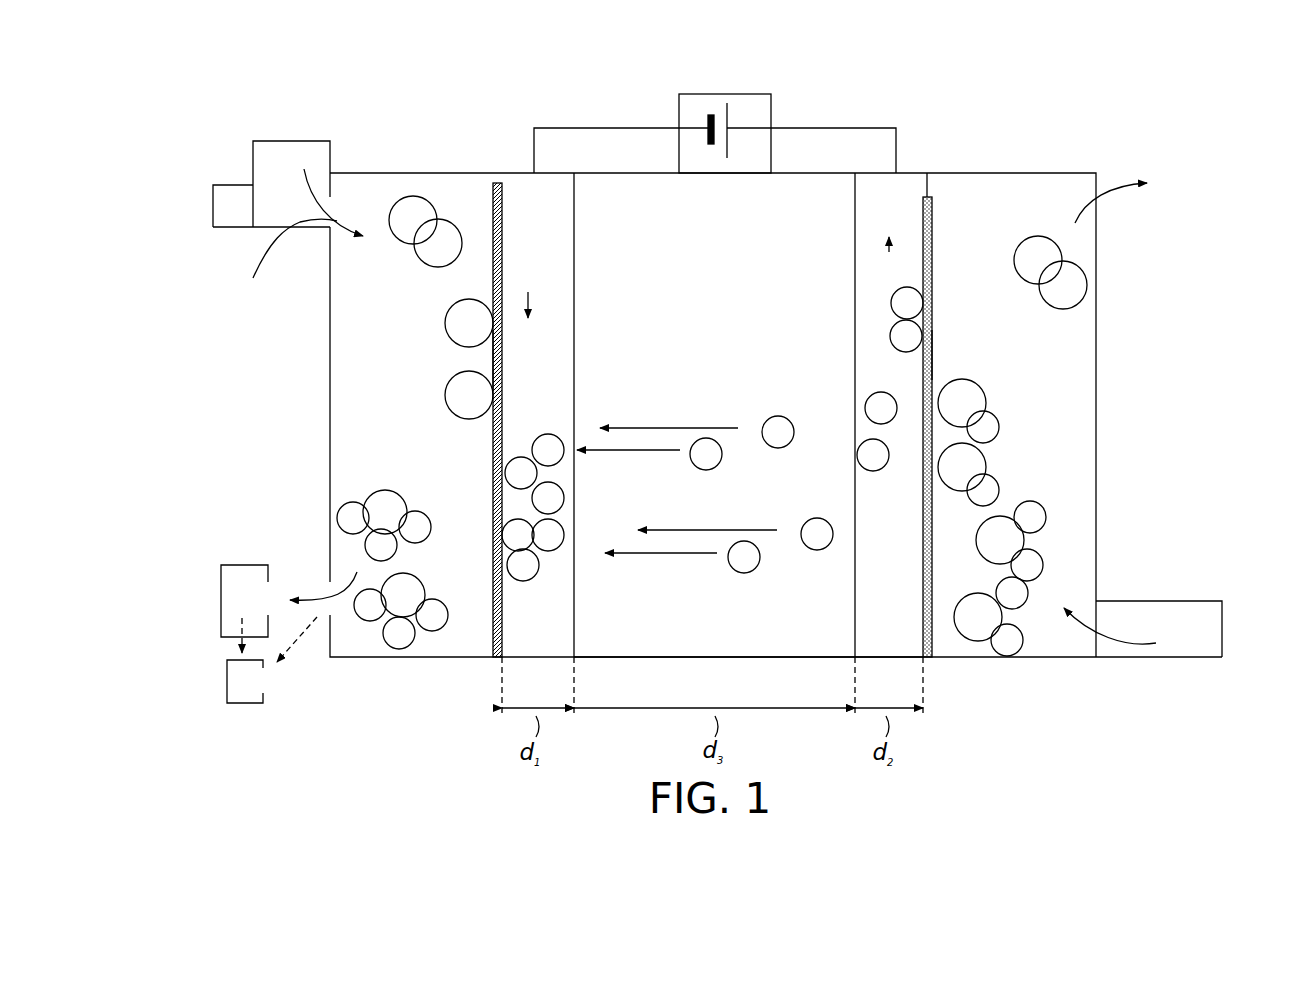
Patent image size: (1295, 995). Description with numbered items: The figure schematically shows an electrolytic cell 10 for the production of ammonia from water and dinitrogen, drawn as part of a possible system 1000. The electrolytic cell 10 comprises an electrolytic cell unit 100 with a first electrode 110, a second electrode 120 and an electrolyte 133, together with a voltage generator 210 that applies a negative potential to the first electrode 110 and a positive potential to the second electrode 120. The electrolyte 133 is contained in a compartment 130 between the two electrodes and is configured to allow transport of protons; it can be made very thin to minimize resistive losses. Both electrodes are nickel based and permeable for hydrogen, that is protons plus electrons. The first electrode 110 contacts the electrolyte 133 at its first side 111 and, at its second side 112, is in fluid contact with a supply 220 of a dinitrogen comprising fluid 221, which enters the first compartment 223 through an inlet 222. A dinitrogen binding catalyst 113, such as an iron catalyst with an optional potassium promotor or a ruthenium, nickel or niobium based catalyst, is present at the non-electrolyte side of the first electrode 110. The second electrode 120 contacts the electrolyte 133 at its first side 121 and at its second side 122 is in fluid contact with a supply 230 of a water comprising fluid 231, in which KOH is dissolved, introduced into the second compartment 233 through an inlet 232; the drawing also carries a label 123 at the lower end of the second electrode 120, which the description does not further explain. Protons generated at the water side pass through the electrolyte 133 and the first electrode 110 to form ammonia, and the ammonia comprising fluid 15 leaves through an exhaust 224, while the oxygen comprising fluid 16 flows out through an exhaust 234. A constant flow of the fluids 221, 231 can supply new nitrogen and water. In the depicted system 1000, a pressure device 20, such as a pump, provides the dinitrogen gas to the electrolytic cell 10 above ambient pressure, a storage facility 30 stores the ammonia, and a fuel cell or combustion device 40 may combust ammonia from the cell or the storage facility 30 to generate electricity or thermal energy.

The electrolytic cell 10 is at (1133, 108).
The ammonia comprising fluid 15 is at (320, 603).
The oxygen comprising fluid 16 is at (1112, 187).
The pressure device 20 is at (222, 238).
The storage facility 30 is at (227, 555).
The fuel cell or combustion device 40 is at (220, 680).
The electrolytic cell unit 100 is at (621, 100).
The first electrode 110 is at (503, 176).
The first side of first electrode 111 is at (578, 329).
The second side of first electrode 112 is at (493, 359).
The dinitrogen binding catalyst 113 is at (502, 634).
The second electrode 120 is at (912, 165).
The first side of second electrode 121 is at (852, 346).
The second side of second electrode 122 is at (932, 350).
The second electrode region 123 is at (923, 634).
The electrolyte compartment 130 is at (807, 210).
The electrolyte 133 is at (732, 608).
The voltage generator 210 is at (785, 78).
The supply of dinitrogen comprising fluid 220 is at (291, 98).
The dinitrogen comprising fluid 221 is at (332, 212).
The inlet for dinitrogen comprising fluid 222 is at (276, 266).
The first compartment 223 is at (358, 444).
The exhaust for ammonia comprising fluid 224 is at (327, 607).
The supply of water comprising fluid 230 is at (1215, 588).
The water comprising fluid 231 is at (1133, 638).
The inlet for water comprising fluid 232 is at (1097, 625).
The second compartment 233 is at (1077, 393).
The exhaust for oxygen comprising fluid 234 is at (1083, 190).
The system 1000 is at (258, 352).